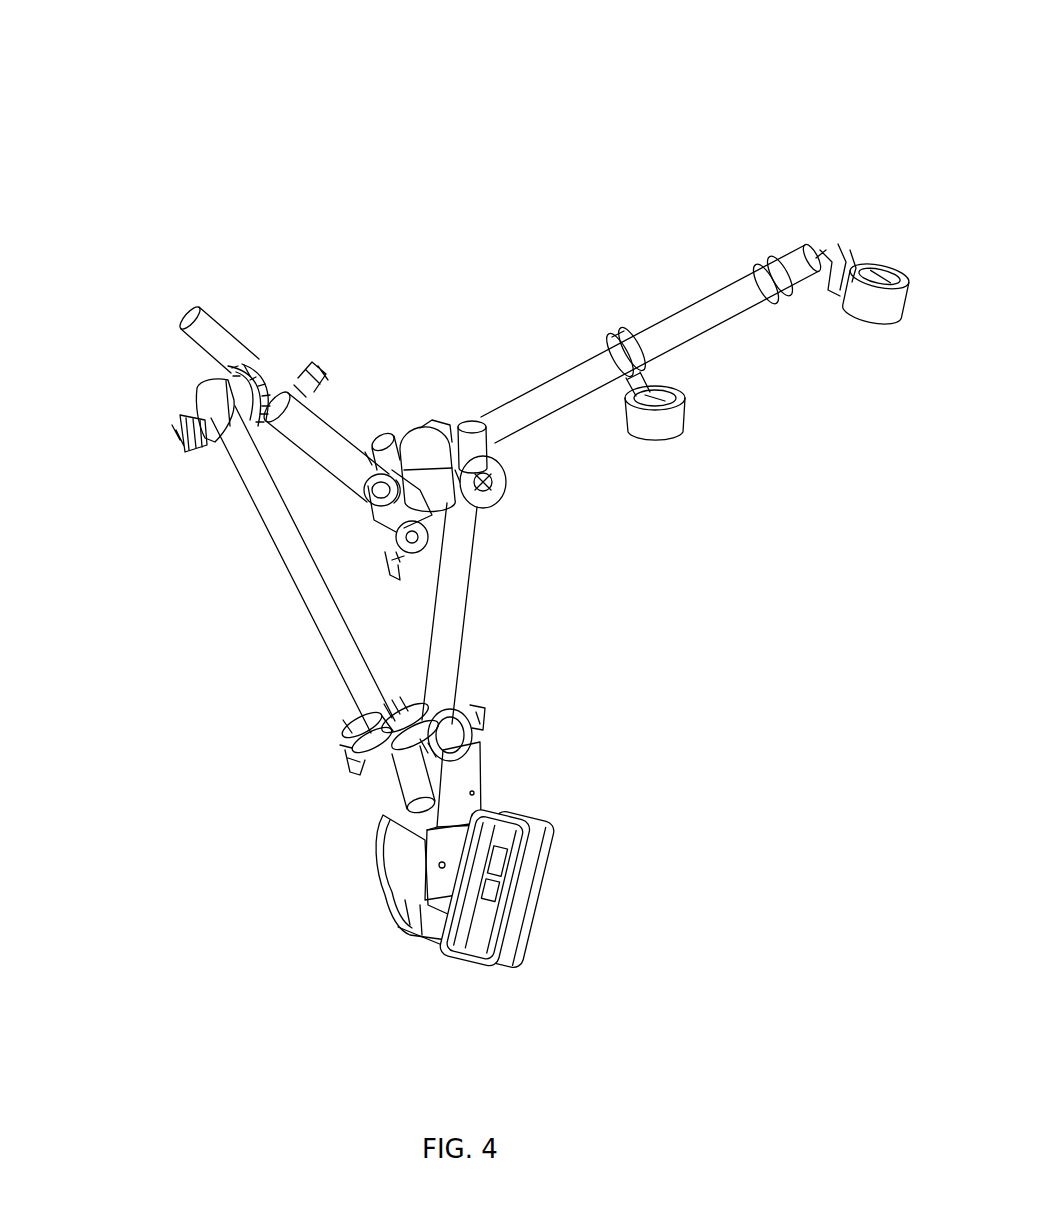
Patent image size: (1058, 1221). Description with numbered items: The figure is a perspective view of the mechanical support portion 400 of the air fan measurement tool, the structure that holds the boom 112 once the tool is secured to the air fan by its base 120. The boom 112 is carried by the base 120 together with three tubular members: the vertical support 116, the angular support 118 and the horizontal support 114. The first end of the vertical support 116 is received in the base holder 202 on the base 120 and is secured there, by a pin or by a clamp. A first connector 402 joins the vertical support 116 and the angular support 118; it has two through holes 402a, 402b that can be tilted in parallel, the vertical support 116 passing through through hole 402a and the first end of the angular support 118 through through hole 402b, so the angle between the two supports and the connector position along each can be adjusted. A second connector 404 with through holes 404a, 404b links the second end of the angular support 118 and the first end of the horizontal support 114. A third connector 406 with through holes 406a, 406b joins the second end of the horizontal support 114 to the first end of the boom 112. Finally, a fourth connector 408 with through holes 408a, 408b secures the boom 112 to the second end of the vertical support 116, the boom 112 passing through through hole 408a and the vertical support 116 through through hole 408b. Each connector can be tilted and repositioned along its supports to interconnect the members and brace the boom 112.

The mechanical support portion 400 is at (110, 89).
The horizontal support 114 is at (205, 320).
The second connector 404 is at (196, 406).
The through hole 404a is at (234, 418).
The through hole 404b is at (283, 390).
The angular support 118 is at (325, 630).
The vertical support 116 is at (447, 618).
The boom 112 is at (533, 395).
The fourth connector 408 is at (417, 432).
The through hole 408a is at (463, 432).
The through hole 408b is at (484, 458).
The third connector 406 is at (430, 503).
The through hole 406a is at (397, 540).
The through hole 406b is at (372, 480).
The first connector 402 is at (353, 726).
The through hole 402a is at (392, 752).
The through hole 402b is at (447, 717).
The base holder 202 is at (395, 866).
The base 120 is at (522, 897).